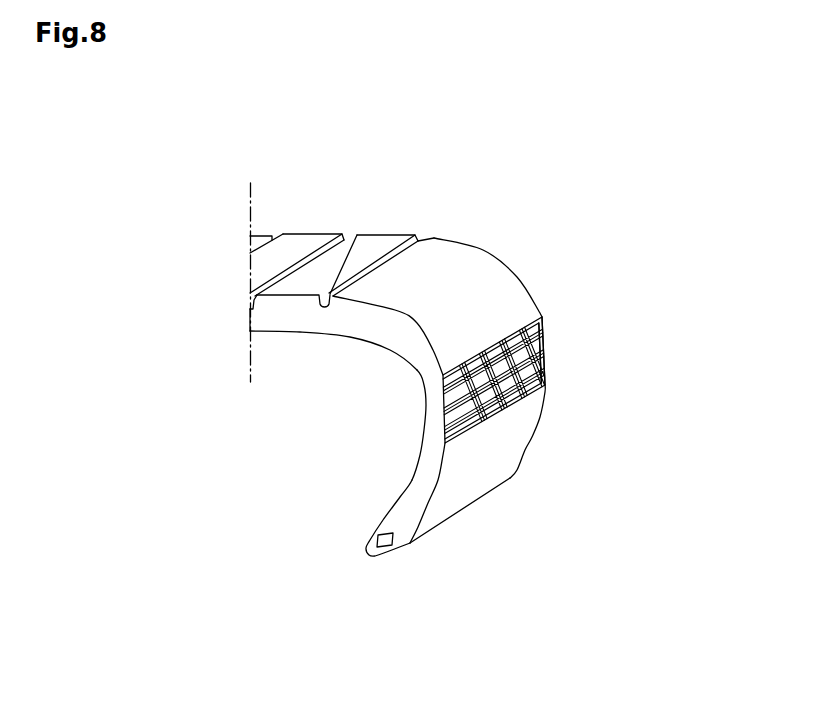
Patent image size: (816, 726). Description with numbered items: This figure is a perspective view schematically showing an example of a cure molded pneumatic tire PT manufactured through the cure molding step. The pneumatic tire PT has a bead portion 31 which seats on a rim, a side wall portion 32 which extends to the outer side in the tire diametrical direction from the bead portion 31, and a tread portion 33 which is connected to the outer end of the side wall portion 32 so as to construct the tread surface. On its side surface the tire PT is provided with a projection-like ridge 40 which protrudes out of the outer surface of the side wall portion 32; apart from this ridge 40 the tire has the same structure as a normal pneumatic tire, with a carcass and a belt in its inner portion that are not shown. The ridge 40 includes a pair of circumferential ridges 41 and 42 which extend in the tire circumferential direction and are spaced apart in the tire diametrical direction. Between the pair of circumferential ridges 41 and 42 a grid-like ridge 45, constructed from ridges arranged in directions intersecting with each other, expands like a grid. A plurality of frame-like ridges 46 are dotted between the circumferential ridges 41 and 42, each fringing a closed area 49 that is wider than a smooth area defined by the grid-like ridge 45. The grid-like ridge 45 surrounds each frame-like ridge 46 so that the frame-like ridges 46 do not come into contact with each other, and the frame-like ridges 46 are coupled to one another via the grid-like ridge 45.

The bead portion 31 is at (453, 512).
The side wall portion 32 is at (546, 362).
The tread portion 33 is at (377, 245).
The ridge 40 is at (565, 348).
The circumferential ridge 41 is at (500, 347).
The circumferential ridge 42 is at (508, 415).
The grid-like ridge 45 is at (432, 397).
The frame-like ridge 46 is at (547, 363).
The closed area 49 is at (478, 372).
The pneumatic tire PT is at (533, 236).